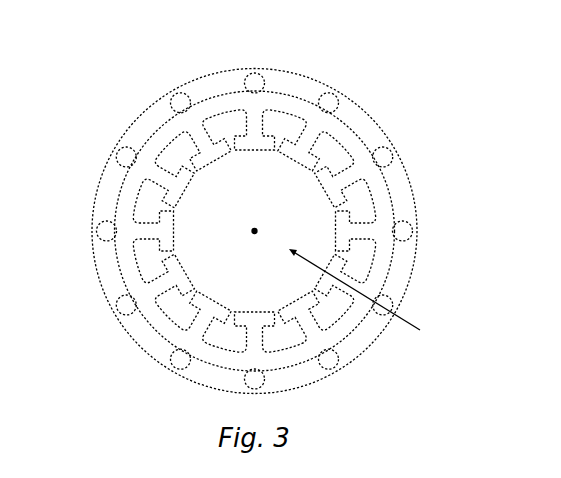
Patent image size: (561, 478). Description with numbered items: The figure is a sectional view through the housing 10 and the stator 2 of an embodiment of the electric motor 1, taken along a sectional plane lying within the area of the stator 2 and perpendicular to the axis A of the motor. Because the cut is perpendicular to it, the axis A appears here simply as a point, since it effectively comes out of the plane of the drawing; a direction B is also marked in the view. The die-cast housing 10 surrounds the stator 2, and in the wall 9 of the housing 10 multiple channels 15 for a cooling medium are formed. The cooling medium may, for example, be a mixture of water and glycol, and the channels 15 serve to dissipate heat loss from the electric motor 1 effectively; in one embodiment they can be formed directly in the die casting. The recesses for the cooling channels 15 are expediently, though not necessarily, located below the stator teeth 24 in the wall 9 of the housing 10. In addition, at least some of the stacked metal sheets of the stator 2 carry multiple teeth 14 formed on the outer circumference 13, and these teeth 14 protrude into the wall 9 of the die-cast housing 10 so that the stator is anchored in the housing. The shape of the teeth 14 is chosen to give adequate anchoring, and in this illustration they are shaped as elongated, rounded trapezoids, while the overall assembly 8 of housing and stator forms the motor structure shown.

The electric motor 1 is at (266, 57).
The stator 2 is at (285, 100).
The electric machine stator assembly 8 is at (412, 322).
The wall 9 is at (157, 110).
The housing 10 is at (124, 119).
The outer circumference 13 is at (385, 234).
The teeth 14 is at (412, 194).
The channels 15 is at (338, 93).
The stator teeth 24 is at (195, 150).
The axis A is at (253, 226).
The radial direction B is at (354, 280).